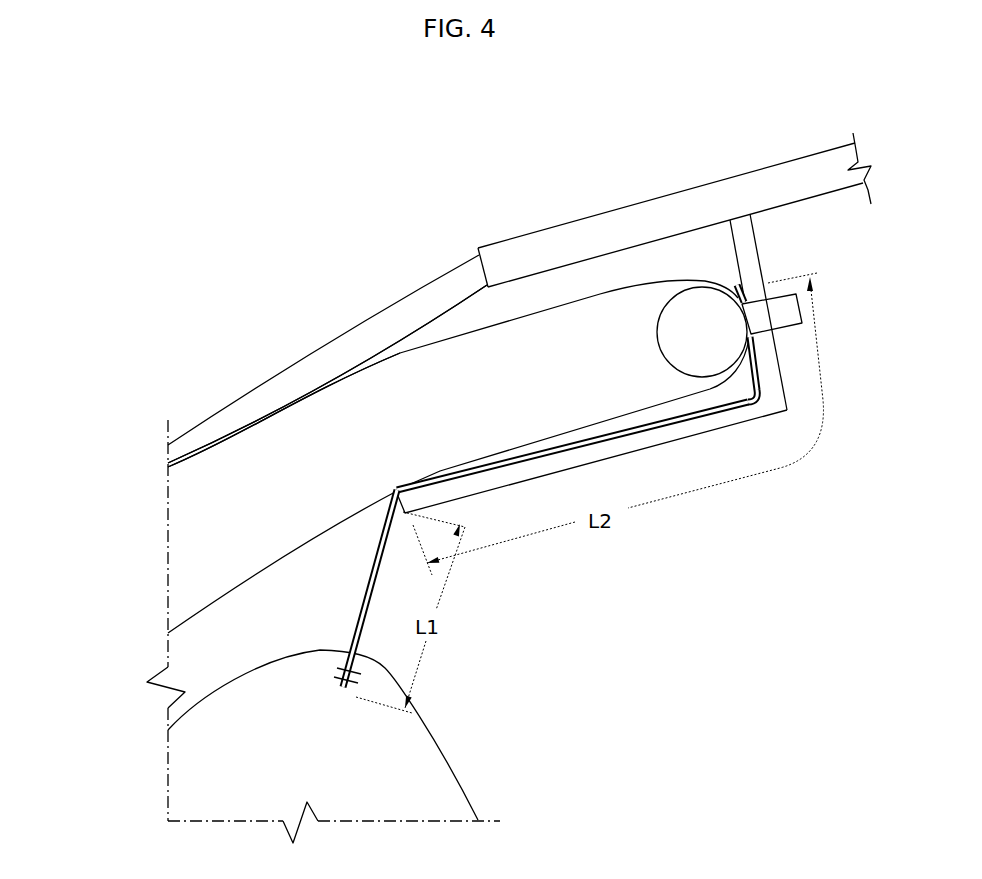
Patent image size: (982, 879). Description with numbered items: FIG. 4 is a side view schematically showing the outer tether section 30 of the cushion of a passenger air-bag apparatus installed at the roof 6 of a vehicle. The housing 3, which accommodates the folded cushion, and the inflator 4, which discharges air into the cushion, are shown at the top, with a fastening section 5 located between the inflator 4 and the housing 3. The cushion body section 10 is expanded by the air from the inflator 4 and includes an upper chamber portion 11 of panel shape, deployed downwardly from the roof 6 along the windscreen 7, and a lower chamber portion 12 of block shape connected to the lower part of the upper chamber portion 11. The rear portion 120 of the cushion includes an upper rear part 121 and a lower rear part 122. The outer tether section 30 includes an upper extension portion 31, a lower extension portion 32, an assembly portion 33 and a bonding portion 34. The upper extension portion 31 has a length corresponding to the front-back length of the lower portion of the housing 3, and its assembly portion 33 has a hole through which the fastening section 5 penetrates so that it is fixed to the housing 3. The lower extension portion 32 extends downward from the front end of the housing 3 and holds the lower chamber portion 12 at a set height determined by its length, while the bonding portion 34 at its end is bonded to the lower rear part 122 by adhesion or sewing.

The housing 3 is at (467, 472).
The inflator 4 is at (697, 313).
The fastening section 5 is at (777, 312).
The roof 6 is at (587, 230).
The windscreen 7 is at (420, 297).
The cushion body section 10 is at (95, 535).
The upper chamber portion 11 is at (205, 560).
The lower chamber portion 12 is at (241, 750).
The outer tether section 30 is at (545, 497).
The upper extension portion 31 is at (623, 443).
The lower extension portion 32 is at (372, 588).
The assembly portion 33 is at (742, 307).
The bonding portion 34 is at (357, 676).
The rear portion 120 is at (258, 303).
The upper rear part 121 is at (305, 537).
The lower rear part 122 is at (283, 655).